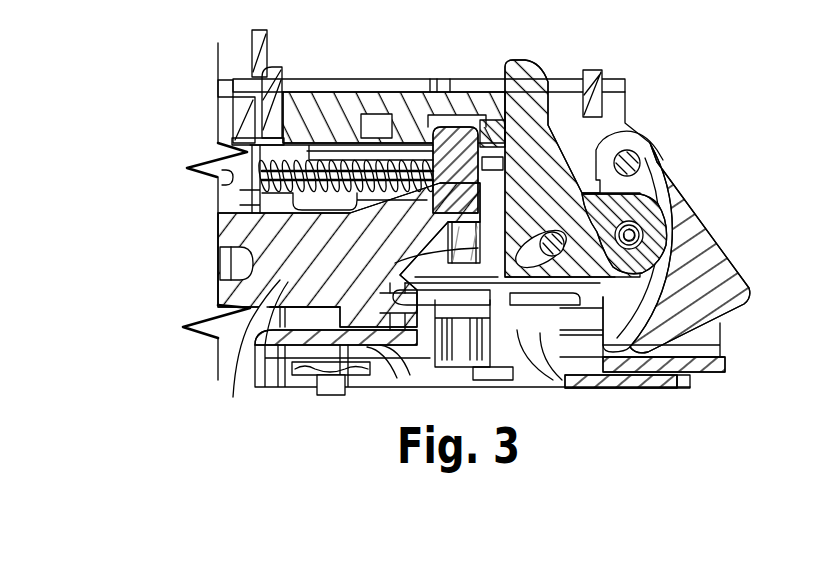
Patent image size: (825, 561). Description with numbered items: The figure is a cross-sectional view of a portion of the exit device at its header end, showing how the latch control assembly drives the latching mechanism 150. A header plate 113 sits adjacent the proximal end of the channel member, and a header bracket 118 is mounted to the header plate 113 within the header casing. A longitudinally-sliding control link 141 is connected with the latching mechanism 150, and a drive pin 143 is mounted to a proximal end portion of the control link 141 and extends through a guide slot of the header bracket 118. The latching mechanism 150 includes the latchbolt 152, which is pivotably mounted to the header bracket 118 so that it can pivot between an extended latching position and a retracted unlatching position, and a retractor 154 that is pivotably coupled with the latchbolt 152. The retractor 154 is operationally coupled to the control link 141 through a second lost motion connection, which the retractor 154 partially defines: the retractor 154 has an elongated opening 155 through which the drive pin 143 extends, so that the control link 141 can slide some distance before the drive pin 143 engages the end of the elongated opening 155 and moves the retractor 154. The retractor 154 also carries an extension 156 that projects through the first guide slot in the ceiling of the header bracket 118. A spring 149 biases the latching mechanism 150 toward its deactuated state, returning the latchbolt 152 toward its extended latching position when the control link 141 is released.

The header plate 113 is at (462, 78).
The header bracket 118 is at (337, 82).
The control link 141 is at (453, 304).
The drive pin 143 is at (554, 230).
The spring 149 is at (418, 263).
The latching mechanism 150 is at (738, 104).
The latchbolt 152 is at (712, 218).
The retractor 154 is at (553, 170).
The elongated opening 155 is at (606, 276).
The extension 156 is at (533, 66).